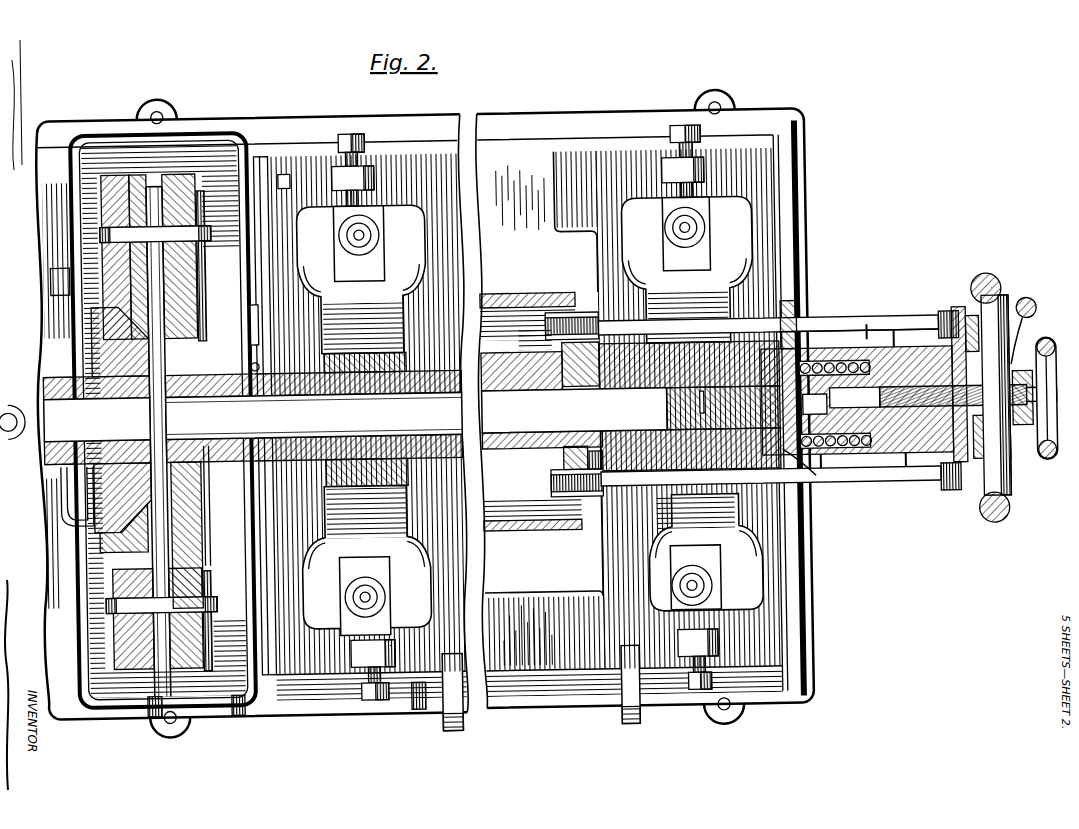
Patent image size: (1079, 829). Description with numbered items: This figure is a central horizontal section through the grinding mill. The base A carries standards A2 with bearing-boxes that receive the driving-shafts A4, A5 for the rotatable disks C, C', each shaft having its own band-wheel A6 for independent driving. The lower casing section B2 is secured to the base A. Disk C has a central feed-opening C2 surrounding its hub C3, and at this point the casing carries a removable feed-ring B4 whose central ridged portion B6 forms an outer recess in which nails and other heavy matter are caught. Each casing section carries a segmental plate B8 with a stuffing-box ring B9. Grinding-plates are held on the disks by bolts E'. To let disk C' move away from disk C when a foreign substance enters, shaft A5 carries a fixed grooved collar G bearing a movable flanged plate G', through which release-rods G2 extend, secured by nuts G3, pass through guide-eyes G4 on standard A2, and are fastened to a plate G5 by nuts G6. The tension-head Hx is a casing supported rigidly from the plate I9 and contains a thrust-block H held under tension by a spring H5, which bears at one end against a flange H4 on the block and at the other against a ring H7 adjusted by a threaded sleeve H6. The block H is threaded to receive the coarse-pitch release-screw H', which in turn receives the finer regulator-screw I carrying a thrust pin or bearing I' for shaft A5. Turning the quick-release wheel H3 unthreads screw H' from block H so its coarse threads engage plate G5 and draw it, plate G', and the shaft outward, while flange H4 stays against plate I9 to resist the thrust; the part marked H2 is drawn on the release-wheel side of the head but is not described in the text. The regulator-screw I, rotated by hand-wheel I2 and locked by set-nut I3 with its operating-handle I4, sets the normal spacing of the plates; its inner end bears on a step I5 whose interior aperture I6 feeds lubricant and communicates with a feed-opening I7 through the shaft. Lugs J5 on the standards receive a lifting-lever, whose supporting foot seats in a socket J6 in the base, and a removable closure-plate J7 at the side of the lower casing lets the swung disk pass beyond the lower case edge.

The base A is at (590, 113).
The standard A2 is at (352, 540).
The driving-shaft A4 is at (97, 420).
The driving-shaft A5 is at (313, 416).
The band-wheel A6 is at (528, 293).
The lower casing section B2 is at (204, 526).
The feed-ring B4 is at (104, 500).
The central ridged portion B6 is at (58, 495).
The segmental plate B8 is at (252, 322).
The stuffing-box ring B9 is at (254, 354).
The rotatable disk C is at (162, 400).
The rotatable disk C' is at (202, 374).
The central feed-opening C2 is at (112, 345).
The hub C3 is at (123, 498).
The bolt E' is at (170, 386).
The grooved collar G is at (553, 376).
The flanged plate G' is at (593, 504).
The release-rod G2 is at (864, 336).
The nut G3 is at (560, 313).
The guide-eye G4 is at (690, 327).
The plate G5 is at (985, 280).
The nut G6 is at (950, 318).
The thrust-block H is at (857, 406).
The release-screw H' is at (950, 384).
The lever block H2 is at (1010, 458).
The quick-release wheel H3 is at (1009, 512).
The flange H4 is at (830, 336).
The spring H5 is at (828, 472).
The threaded sleeve H6 is at (896, 345).
The ring H7 is at (906, 487).
The tension-head Hx is at (870, 340).
The regulator-screw I is at (975, 398).
The thrust pin or bearing I' is at (815, 404).
The hand-wheel I2 is at (1047, 346).
The set-nut I3 is at (1035, 428).
The operating-handle I4 is at (1030, 306).
The step I5 is at (631, 407).
The interior aperture I6 is at (805, 475).
The feed-opening I7 is at (704, 407).
The plate I9 is at (800, 310).
The lug J5 is at (298, 252).
The socket J6 is at (289, 168).
The closure-plate J7 is at (232, 712).